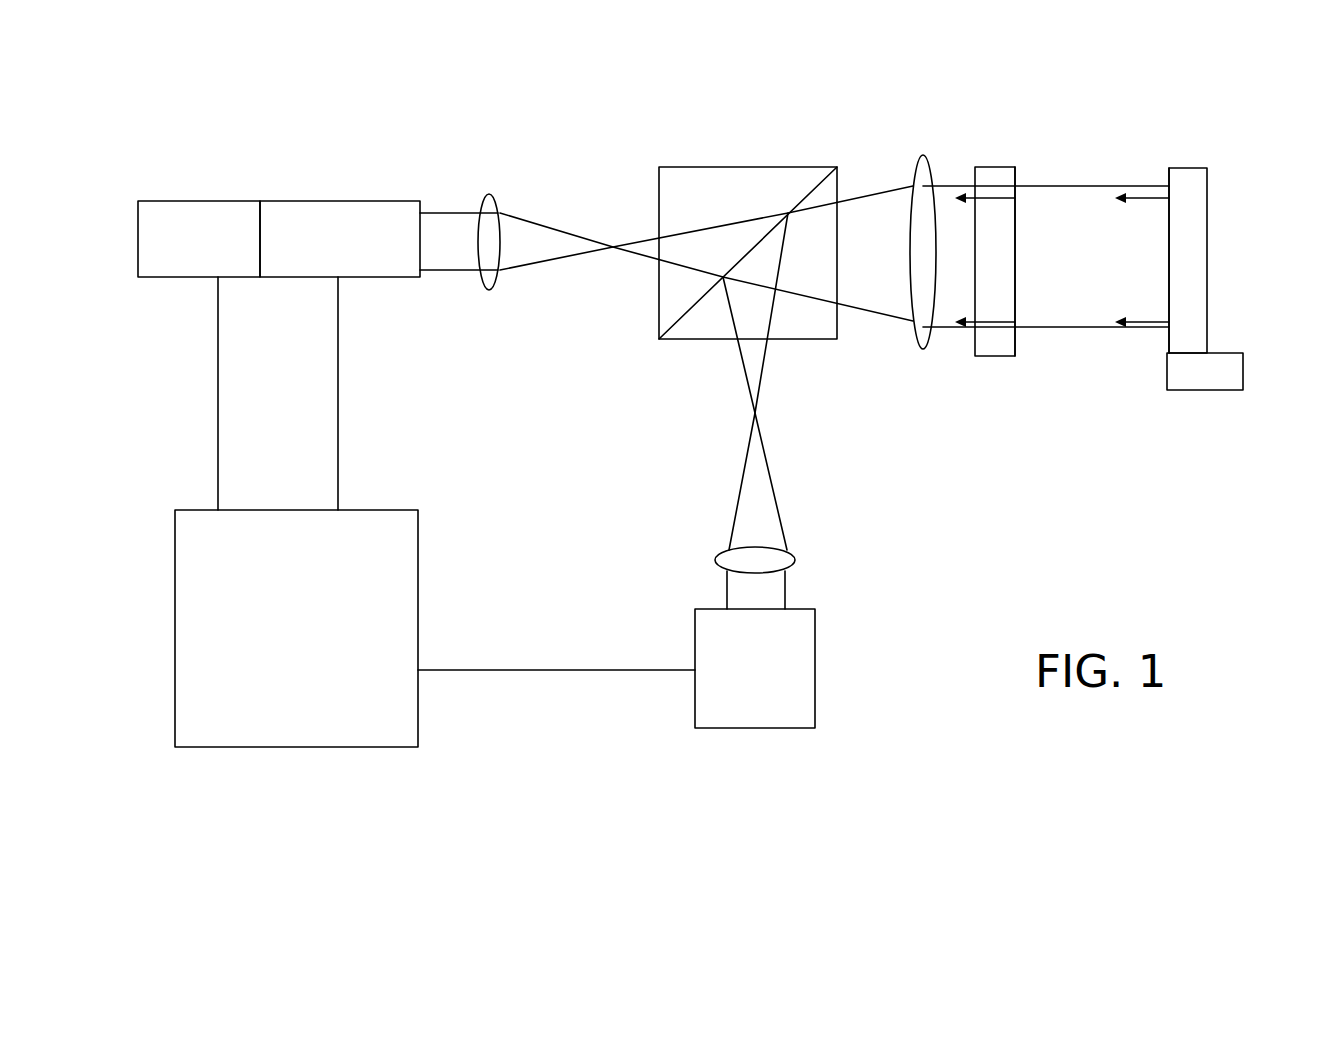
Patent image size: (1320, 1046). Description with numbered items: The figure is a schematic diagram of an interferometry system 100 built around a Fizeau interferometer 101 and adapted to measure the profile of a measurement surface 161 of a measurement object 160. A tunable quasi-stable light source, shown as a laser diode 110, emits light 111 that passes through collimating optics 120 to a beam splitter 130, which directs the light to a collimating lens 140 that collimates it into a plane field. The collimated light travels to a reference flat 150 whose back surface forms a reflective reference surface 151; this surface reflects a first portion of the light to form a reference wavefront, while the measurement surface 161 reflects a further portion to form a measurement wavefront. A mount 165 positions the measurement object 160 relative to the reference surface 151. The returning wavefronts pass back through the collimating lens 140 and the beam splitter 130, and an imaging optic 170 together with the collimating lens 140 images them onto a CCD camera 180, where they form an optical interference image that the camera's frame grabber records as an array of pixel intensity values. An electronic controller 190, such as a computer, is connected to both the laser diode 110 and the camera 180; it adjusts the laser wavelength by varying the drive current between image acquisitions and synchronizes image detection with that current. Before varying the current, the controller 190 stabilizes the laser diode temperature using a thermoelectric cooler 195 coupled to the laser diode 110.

The interferometry system 100 is at (675, 812).
The Fizeau interferometer 101 is at (1168, 146).
The laser diode 110 is at (340, 355).
The light 111 is at (440, 278).
The collimating optics 120 is at (490, 223).
The beam splitter 130 is at (758, 192).
The collimating lens 140 is at (926, 170).
The reference flat 150 is at (995, 340).
The reference surface 151 is at (1016, 254).
The measurement object 160 is at (1188, 195).
The measurement surface 161 is at (1168, 268).
The mount 165 is at (1197, 373).
The imaging optic 170 is at (775, 560).
The CCD camera 180 is at (755, 668).
The electronic controller 190 is at (435, 628).
The thermoelectric cooler 195 is at (199, 355).